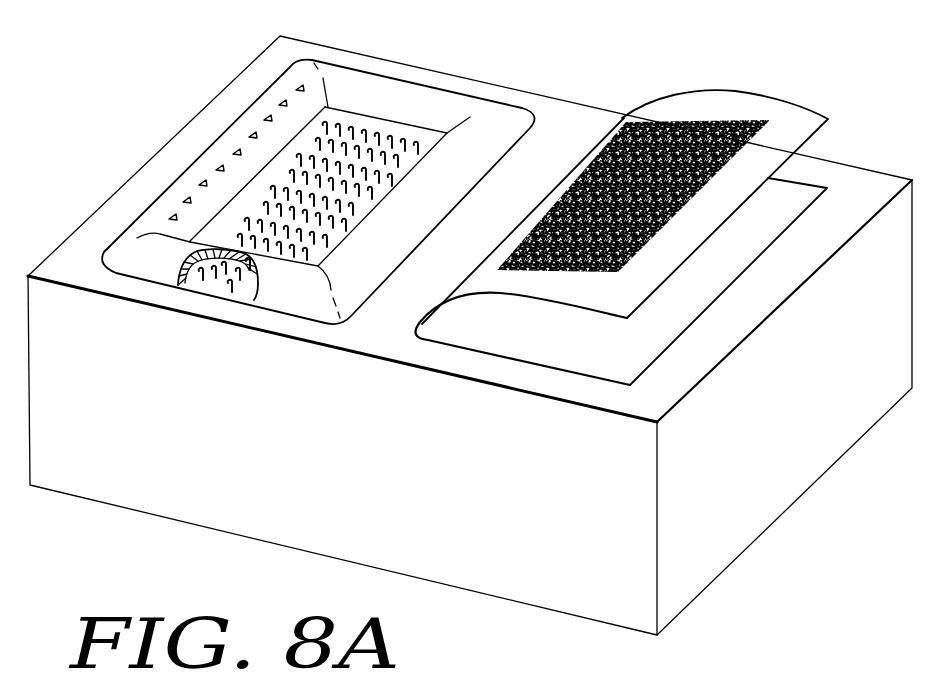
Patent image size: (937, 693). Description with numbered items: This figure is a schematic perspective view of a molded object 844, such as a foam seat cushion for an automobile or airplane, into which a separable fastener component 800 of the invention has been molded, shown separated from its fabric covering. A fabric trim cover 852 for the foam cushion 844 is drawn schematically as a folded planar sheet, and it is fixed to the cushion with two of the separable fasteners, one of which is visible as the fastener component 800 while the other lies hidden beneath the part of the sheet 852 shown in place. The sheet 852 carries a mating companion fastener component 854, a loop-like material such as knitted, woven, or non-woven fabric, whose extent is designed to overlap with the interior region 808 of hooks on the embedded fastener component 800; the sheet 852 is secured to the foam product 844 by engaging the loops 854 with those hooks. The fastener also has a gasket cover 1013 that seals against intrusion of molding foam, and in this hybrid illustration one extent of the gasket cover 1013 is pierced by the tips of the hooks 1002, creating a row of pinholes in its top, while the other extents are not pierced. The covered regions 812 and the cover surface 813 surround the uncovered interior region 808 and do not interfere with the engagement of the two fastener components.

The separable fastener component 800 is at (522, 88).
The interior region 808 is at (391, 148).
The pocket surface 813 is at (347, 80).
The roller 812 is at (213, 285).
The hooks 1002 is at (282, 100).
The gasket cover 1013 is at (212, 155).
The fabric trim cover 852 is at (742, 107).
The mating companion fastener component 854 is at (553, 216).
The molded object 844 is at (833, 160).